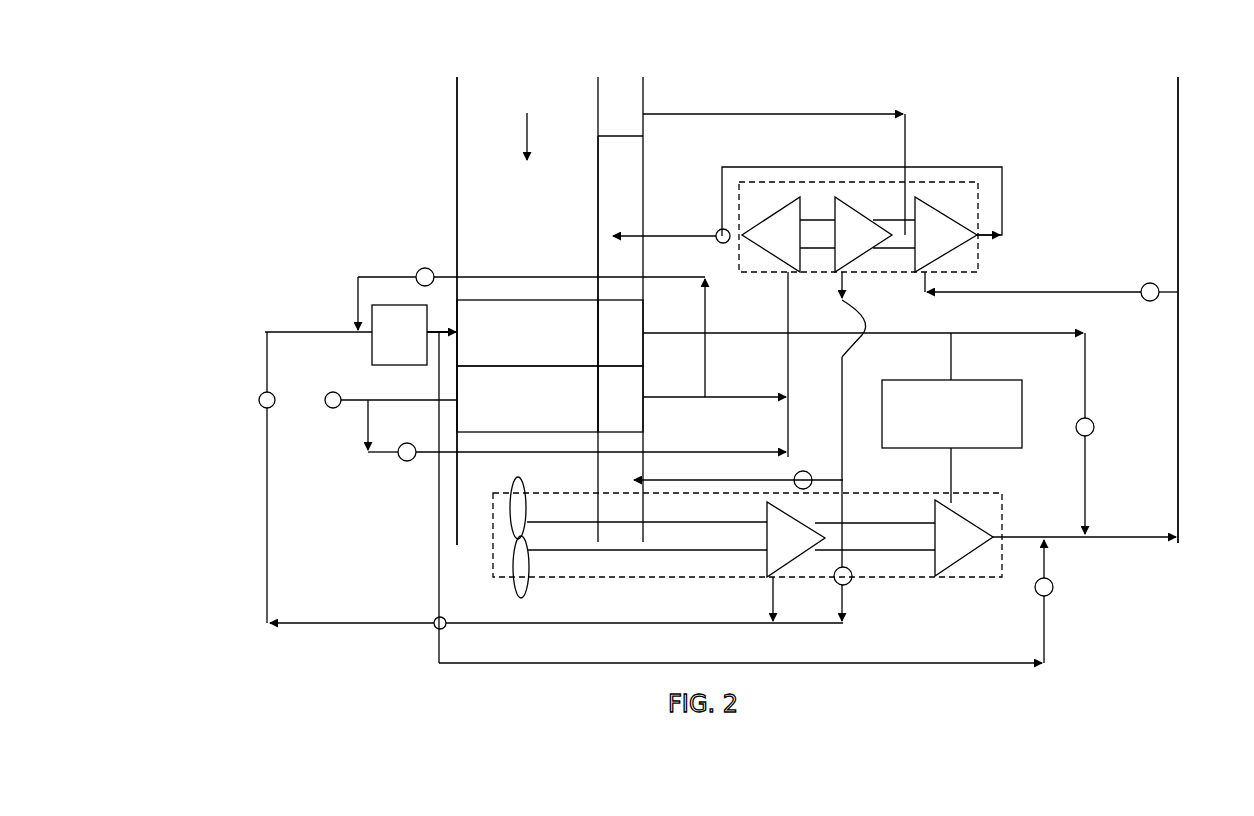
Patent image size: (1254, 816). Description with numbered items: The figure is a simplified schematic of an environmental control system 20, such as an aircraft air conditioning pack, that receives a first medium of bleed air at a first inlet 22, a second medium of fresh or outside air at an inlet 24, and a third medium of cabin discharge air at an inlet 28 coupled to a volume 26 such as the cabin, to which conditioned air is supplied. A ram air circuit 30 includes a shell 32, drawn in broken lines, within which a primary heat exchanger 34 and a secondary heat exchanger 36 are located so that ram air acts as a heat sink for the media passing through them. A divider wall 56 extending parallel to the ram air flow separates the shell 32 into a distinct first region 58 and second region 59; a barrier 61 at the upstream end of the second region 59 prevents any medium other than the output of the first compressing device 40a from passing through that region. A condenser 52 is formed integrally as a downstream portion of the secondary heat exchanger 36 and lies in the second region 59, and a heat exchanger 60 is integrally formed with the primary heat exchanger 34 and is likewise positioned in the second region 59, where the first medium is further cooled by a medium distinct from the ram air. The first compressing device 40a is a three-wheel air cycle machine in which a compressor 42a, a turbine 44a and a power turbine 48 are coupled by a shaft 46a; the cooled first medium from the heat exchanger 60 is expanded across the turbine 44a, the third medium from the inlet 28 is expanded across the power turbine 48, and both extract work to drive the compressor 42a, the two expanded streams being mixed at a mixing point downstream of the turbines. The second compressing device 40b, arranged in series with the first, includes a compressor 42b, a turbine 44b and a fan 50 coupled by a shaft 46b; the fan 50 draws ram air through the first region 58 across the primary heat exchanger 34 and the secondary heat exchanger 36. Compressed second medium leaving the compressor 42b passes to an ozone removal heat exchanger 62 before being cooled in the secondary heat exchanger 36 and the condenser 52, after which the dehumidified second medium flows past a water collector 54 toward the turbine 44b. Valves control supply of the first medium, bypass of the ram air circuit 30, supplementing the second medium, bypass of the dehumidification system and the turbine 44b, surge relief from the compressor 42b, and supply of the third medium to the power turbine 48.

The environmental control system 20 is at (278, 133).
The first inlet 22 is at (329, 392).
The inlet 24 is at (643, 107).
The volume 26 is at (1248, 410).
The inlet 28 is at (1180, 282).
The ram air circuit 30 is at (455, 105).
The shell 32 is at (455, 165).
The primary heat exchanger 34 is at (527, 399).
The secondary heat exchanger 36 is at (527, 333).
The first compressing device 40a is at (970, 186).
The second compressing device 40b is at (935, 594).
The compressor 42a is at (860, 197).
The compressor 42b is at (792, 577).
The turbine 44a is at (750, 230).
The turbine 44b is at (1048, 565).
The shaft 46a is at (810, 220).
The shaft 46b is at (652, 545).
The power turbine 48 is at (977, 240).
The fan 50 is at (528, 570).
The condenser 52 is at (620, 333).
The water collector 54 is at (952, 418).
The divider wall 56 is at (598, 185).
The first region 58 is at (516, 151).
The second region 59 is at (620, 173).
The heat exchanger 60 is at (620, 399).
The barrier 61 is at (617, 133).
The ozone removal heat exchanger 62 is at (414, 335).